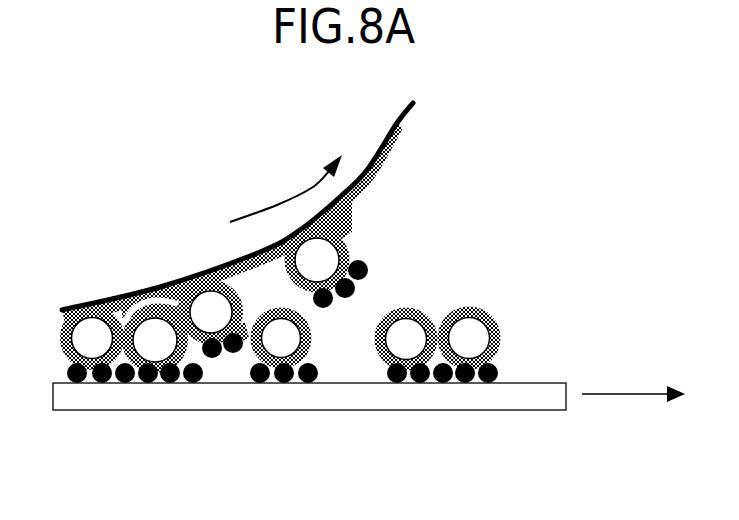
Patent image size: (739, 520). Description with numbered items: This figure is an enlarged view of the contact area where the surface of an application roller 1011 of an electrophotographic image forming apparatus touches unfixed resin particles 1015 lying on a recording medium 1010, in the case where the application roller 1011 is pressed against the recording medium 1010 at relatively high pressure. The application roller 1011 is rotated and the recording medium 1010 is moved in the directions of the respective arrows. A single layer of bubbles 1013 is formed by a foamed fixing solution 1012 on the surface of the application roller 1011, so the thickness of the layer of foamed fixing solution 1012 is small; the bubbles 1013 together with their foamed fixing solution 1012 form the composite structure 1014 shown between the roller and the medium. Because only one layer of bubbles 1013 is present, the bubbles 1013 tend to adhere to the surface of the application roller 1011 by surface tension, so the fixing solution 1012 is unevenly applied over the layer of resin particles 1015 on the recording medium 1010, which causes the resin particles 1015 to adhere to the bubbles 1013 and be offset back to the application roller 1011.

The recording medium 1010 is at (368, 402).
The application roller 1011 is at (388, 110).
The foamed fixing solution 1012 is at (330, 206).
The bubbles 1013 is at (326, 251).
The composite particle 1014 is at (414, 242).
The resin particles 1015 is at (355, 289).